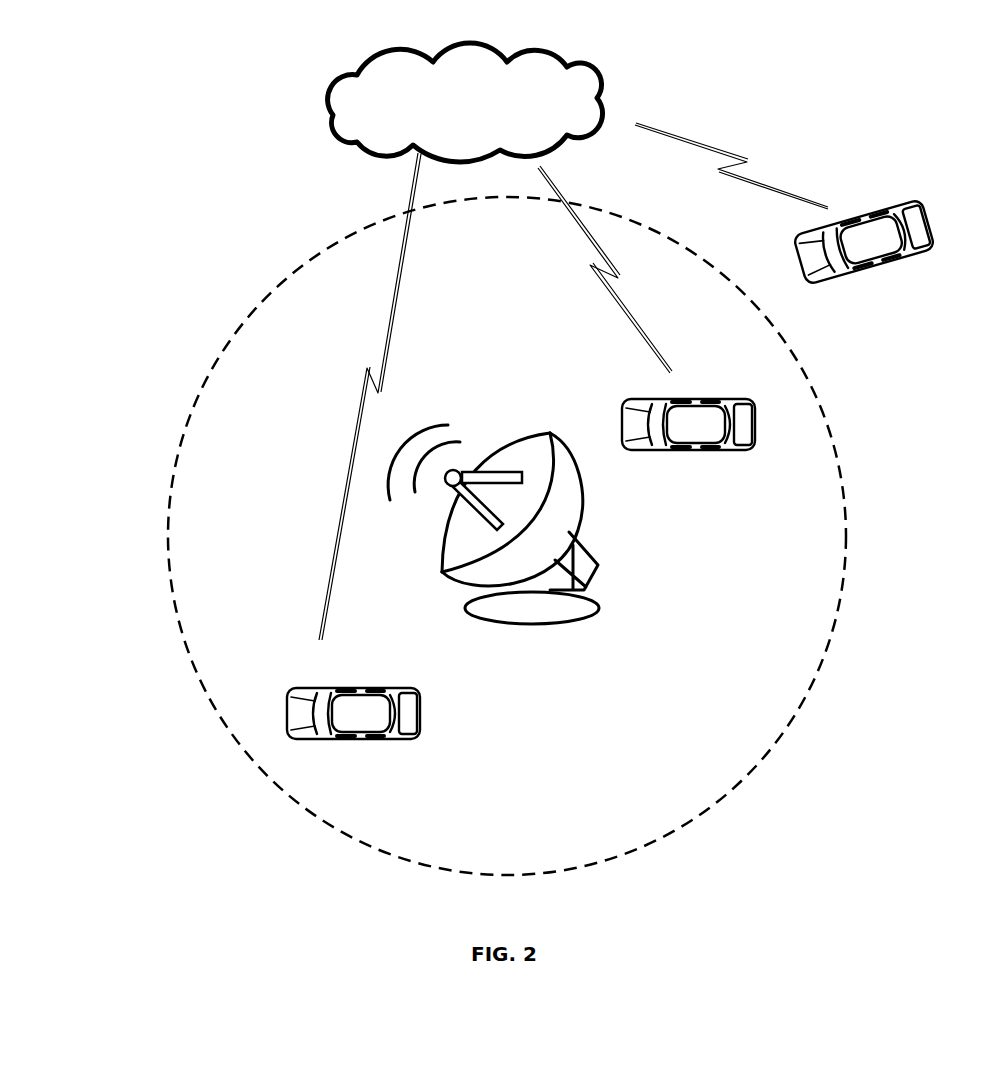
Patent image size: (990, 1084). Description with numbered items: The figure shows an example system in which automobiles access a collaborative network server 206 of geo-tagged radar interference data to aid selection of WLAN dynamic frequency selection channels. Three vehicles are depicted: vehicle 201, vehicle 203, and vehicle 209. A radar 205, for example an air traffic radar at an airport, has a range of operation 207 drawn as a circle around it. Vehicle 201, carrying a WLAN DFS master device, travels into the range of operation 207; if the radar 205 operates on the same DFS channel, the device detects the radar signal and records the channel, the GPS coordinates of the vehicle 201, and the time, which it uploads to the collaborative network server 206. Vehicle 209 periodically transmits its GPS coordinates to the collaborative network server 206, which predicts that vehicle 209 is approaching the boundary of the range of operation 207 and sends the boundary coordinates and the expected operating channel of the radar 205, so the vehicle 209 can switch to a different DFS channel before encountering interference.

The vehicle 201 is at (385, 675).
The vehicle 203 is at (743, 395).
The radar 205 is at (521, 432).
The collaborative network server 206 is at (606, 93).
The range of operation 207 is at (210, 367).
The vehicle 209 is at (888, 213).